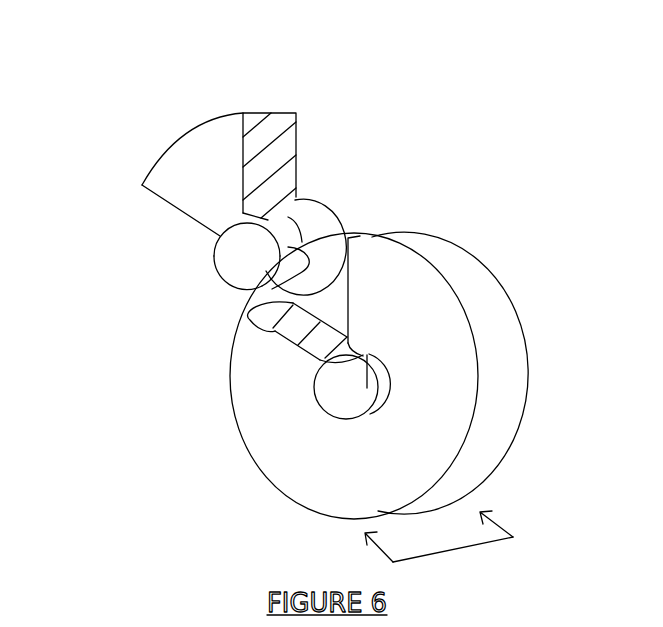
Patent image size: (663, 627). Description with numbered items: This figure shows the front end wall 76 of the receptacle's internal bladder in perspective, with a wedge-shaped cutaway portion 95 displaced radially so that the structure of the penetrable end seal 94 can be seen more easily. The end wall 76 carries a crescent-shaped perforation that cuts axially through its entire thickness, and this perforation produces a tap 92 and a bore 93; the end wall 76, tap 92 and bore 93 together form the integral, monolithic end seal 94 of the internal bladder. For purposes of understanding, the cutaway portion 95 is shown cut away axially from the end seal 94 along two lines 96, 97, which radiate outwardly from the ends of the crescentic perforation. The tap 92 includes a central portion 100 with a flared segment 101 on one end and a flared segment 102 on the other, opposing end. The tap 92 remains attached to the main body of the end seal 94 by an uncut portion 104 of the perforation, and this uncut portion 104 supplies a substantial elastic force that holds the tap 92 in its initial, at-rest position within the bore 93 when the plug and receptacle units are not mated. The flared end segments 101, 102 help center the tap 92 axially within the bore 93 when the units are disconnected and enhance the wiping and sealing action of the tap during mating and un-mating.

The end wall 76 is at (488, 322).
The tap 92 is at (247, 252).
The bore 93 is at (367, 380).
The penetrable end seal 94 is at (439, 547).
The cutaway portion 95 is at (185, 125).
The cut line 96 is at (318, 325).
The cut line 97 is at (350, 292).
The central portion 100 is at (227, 287).
The flared segment 101 is at (322, 203).
The flared segment 102 is at (303, 269).
The uncut portion 104 is at (268, 220).